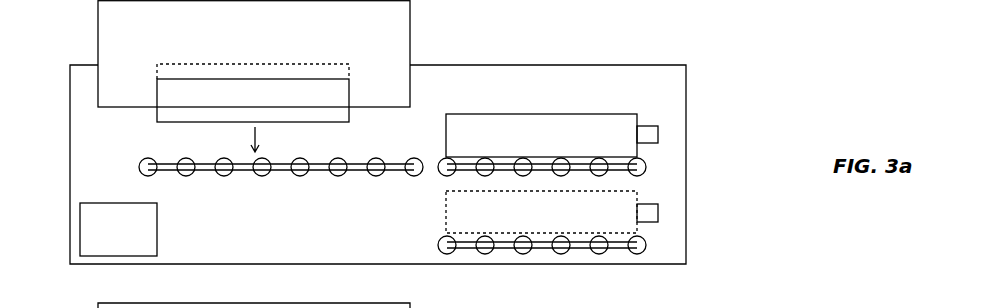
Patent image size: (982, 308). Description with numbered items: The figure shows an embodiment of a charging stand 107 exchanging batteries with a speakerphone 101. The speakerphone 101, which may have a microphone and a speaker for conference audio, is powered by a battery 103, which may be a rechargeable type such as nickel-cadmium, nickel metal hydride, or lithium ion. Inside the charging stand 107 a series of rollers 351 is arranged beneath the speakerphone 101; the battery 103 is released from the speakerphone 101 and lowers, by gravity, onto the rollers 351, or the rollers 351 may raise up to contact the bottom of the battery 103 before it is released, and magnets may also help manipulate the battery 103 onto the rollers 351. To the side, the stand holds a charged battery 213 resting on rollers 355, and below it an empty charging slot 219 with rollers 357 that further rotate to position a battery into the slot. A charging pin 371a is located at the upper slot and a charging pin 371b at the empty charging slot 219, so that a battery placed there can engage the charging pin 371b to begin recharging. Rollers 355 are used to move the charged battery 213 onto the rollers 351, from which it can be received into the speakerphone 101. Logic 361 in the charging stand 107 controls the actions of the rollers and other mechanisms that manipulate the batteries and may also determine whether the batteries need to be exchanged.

The speakerphone 101 is at (399, 34).
The battery 103 is at (276, 109).
The charging stand 107 is at (683, 97).
The charged battery 213 is at (561, 149).
The charging slot 219 is at (561, 226).
The rollers 351 is at (143, 164).
The rollers 355 is at (646, 164).
The rollers 357 is at (648, 244).
The logic 361 is at (133, 252).
The charging pin 371a is at (650, 128).
The charging pin 371b is at (647, 216).